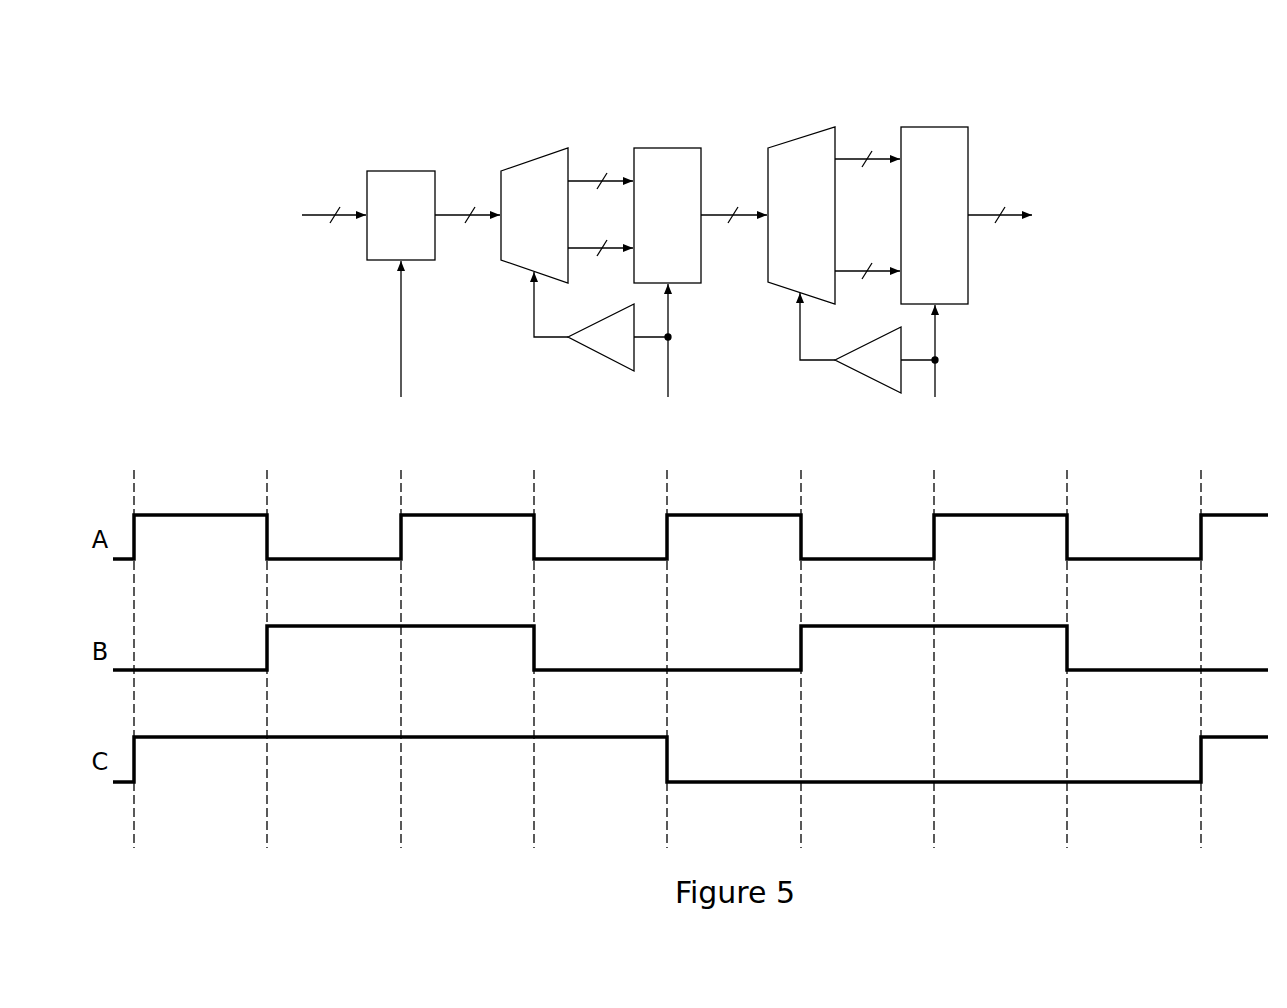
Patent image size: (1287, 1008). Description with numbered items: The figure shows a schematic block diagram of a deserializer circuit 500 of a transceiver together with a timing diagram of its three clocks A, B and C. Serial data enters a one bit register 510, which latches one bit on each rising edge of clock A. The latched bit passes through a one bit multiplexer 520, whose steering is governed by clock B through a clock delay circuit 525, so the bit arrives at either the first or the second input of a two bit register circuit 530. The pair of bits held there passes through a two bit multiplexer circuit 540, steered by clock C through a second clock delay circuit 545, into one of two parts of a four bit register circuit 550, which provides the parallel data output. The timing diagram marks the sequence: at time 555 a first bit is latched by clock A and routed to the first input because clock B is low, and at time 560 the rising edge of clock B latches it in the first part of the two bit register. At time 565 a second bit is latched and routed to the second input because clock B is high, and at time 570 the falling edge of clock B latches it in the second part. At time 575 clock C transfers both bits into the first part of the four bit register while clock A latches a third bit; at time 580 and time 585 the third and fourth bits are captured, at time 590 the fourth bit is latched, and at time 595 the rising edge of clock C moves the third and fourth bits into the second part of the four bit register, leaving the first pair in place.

The deserializer circuit 500 is at (450, 65).
The one bit register 510 is at (390, 171).
The one bit multiplexer 520 is at (530, 161).
The clock delay circuit 525 is at (602, 354).
The two bit register circuit 530 is at (655, 148).
The two bit multiplexer circuit 540 is at (790, 141).
The clock delay circuit 545 is at (867, 380).
The four bit register circuit 550 is at (948, 127).
The time 555 is at (134, 818).
The time 560 is at (267, 818).
The time 565 is at (401, 813).
The time 570 is at (534, 818).
The time 575 is at (667, 818).
The time 580 is at (801, 810).
The time 585 is at (934, 810).
The time 590 is at (1067, 812).
The time 595 is at (1201, 815).